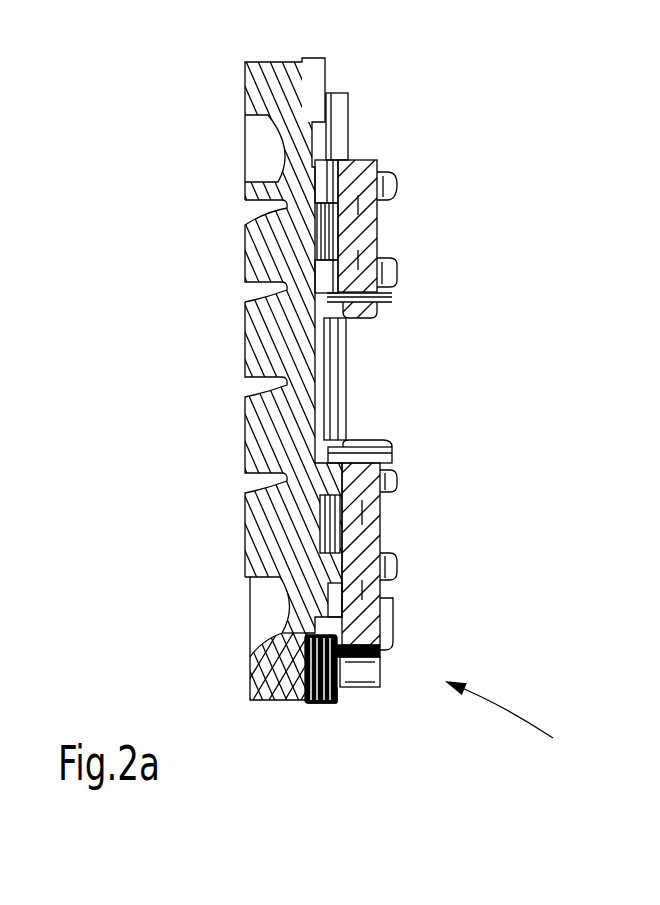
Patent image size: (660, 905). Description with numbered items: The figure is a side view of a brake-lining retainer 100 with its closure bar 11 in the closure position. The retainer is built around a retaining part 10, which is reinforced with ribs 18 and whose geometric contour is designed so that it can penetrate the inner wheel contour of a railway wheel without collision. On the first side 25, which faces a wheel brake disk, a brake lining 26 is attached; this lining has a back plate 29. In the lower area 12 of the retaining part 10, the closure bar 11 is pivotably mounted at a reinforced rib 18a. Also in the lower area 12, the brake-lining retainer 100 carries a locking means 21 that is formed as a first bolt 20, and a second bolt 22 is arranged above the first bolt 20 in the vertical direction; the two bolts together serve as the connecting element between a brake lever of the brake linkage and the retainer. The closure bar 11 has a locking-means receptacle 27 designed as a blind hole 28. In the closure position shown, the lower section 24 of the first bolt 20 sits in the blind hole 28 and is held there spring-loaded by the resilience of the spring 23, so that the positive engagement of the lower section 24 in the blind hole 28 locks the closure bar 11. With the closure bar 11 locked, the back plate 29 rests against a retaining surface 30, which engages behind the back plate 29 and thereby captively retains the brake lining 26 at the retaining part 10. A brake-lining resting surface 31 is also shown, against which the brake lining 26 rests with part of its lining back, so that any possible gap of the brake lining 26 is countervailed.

The brake-lining retainer 100 is at (137, 93).
The retaining part 10 is at (347, 370).
The closure bar 11 is at (327, 703).
The lower area 12 is at (513, 717).
The ribs 18 is at (396, 184).
The reinforced rib 18a is at (397, 567).
The first bolt 20 is at (380, 515).
The locking means 21 is at (380, 510).
The second bolt 22 is at (380, 236).
The spring 23 is at (392, 602).
The lower section 24 is at (370, 613).
The first side 25 is at (247, 327).
The brake lining 26 is at (247, 433).
The locking-means receptacle 27 is at (392, 633).
The blind hole 28 is at (380, 653).
The back plate 29 is at (247, 248).
The retaining surface 30 is at (250, 703).
The brake-lining resting surface 31 is at (287, 703).